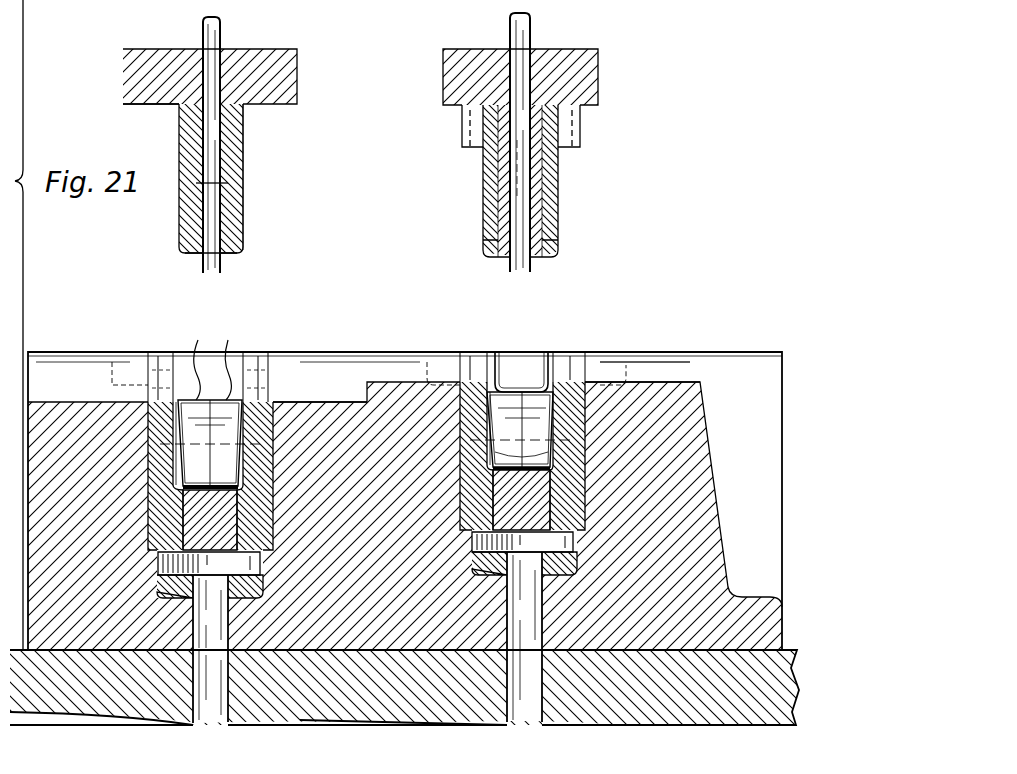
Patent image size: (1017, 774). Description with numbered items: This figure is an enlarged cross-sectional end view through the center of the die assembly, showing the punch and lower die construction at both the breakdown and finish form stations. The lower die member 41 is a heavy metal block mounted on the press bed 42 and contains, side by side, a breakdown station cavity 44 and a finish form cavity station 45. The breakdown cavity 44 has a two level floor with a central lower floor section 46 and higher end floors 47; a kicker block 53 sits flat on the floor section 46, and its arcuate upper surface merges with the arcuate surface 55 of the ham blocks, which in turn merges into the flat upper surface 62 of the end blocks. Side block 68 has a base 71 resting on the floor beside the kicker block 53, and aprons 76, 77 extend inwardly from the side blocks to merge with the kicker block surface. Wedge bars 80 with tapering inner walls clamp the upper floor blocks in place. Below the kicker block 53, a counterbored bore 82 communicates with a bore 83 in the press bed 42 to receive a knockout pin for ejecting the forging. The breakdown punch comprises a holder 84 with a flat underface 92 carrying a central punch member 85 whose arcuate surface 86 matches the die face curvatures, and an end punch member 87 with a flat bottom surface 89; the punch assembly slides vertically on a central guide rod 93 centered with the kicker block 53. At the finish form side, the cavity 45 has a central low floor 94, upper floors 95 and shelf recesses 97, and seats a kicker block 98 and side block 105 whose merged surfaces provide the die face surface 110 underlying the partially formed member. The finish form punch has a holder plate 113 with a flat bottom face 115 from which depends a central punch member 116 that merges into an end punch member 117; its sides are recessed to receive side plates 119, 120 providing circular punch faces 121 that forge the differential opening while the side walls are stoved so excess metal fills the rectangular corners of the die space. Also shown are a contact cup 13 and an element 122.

The cup-shaped contact member 13 is at (514, 352).
The lower die member 41 is at (712, 520).
The press bed 42 is at (600, 726).
The breakdown station cavity 44 is at (272, 377).
The finish form cavity station 45 is at (461, 441).
The central horizontal lower floor section 46 is at (160, 556).
The higher end floors 47 is at (274, 420).
The kicker block 53 is at (223, 529).
The arcuate surface of ham block 55 is at (204, 469).
The upper surface of end block set 62 is at (213, 359).
The side block 68 is at (166, 519).
The base of side block 71 is at (272, 520).
The apron 76 is at (178, 462).
The apron 77 is at (234, 481).
The wedge bars 80 is at (156, 352).
The central top counterbored bore 82 is at (228, 626).
The bore in press bed 83 is at (228, 684).
The holder 84 is at (296, 78).
The central punch member 85 is at (244, 212).
The arcuate surface 86 is at (222, 258).
The end punch member 87 is at (245, 146).
The horizontal flat bottom surfaces 89 is at (228, 196).
The flat horizontal underface 92 is at (128, 106).
The central guide rod 93 is at (213, 36).
The central low floor 94 is at (572, 538).
The horizontal upper floors 95 is at (586, 404).
The shelf recesses 97 is at (622, 364).
The kicker block 98 is at (494, 515).
The side block 105 is at (585, 500).
The die face surface 110 is at (488, 450).
The holder plate 113 is at (598, 78).
The flat bottom face 115 is at (586, 108).
The central punch member 116 is at (531, 256).
The end punch member 117 is at (466, 125).
The side plate 119 is at (483, 194).
The side plate 120 is at (559, 217).
The circular punch faces 121 is at (484, 248).
The inner sleeve 122 is at (556, 176).